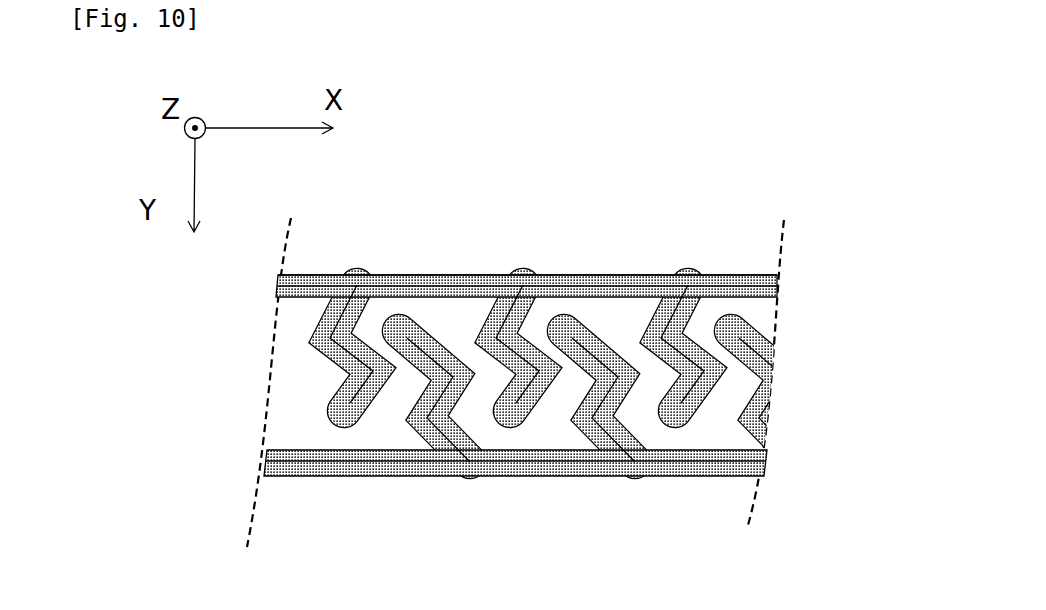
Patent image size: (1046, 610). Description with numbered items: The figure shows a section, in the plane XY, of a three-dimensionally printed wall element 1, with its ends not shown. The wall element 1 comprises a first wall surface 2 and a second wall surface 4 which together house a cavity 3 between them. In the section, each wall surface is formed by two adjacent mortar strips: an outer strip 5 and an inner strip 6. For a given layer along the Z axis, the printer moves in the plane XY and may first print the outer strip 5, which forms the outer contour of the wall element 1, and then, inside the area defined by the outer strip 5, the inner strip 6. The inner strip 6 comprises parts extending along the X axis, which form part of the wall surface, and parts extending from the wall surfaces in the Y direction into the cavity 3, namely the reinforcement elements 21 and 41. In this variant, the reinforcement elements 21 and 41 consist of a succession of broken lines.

The wall element 1 is at (580, 167).
The first wall surface 2 is at (645, 283).
The cavity 3 is at (621, 319).
The second wall surface 4 is at (608, 468).
The outer strip 5 is at (777, 279).
The inner strip 6 is at (777, 288).
The reinforcement element 21 is at (322, 328).
The reinforcement element 41 is at (411, 424).